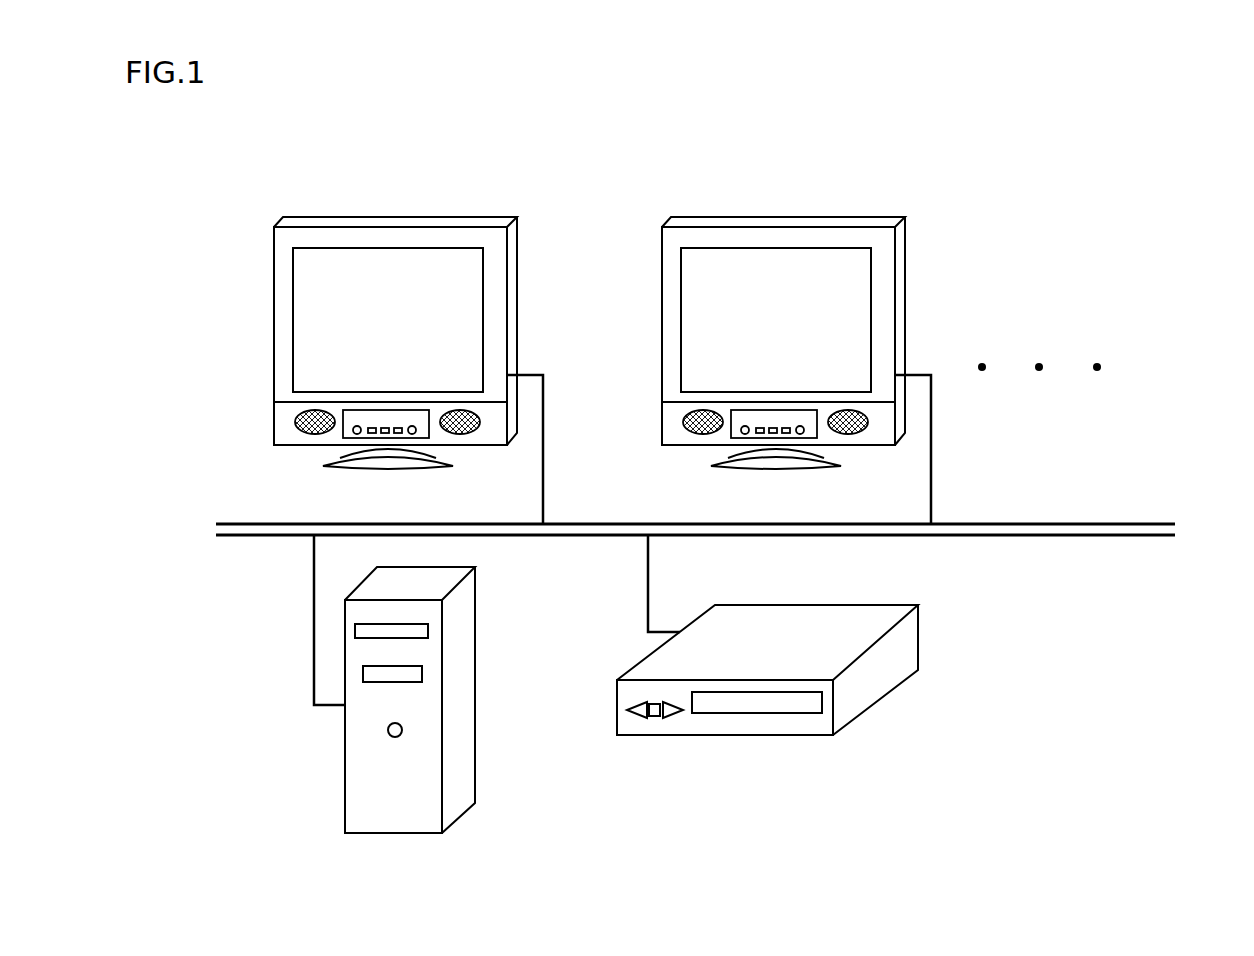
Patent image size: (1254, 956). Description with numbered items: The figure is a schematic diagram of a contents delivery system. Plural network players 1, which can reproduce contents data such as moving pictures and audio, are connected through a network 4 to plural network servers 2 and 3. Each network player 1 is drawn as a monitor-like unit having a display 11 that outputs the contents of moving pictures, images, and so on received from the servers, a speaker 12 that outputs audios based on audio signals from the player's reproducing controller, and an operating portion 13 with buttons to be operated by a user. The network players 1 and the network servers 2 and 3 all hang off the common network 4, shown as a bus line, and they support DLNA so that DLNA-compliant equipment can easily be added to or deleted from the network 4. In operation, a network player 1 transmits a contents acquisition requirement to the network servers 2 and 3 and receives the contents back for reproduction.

The network player 1 is at (1218, 237).
The display 11 is at (308, 292).
The speaker 12 is at (440, 427).
The operating portion 13 is at (358, 426).
The network server 2 is at (787, 763).
The network server 3 is at (335, 738).
The network 4 is at (985, 538).